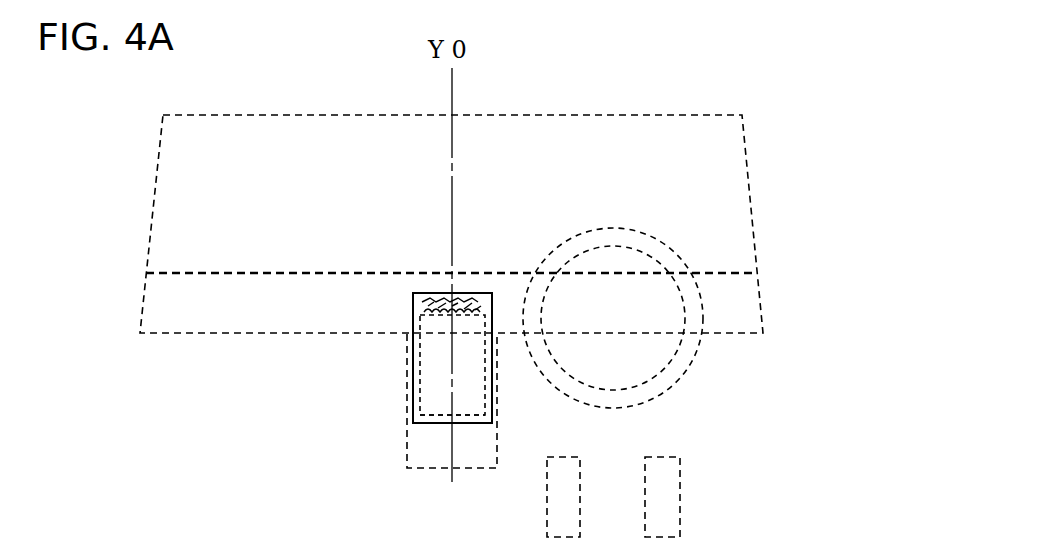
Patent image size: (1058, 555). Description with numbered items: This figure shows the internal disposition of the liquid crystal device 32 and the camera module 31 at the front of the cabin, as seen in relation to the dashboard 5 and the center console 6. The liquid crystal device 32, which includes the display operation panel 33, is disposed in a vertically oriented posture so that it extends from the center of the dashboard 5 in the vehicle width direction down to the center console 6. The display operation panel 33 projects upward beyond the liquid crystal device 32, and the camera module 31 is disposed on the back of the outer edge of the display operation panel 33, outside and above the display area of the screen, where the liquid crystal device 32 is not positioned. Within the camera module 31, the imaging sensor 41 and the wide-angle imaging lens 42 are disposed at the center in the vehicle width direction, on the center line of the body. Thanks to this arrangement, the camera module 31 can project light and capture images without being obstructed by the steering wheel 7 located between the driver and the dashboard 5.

The dashboard 5 is at (250, 335).
The center console 6 is at (407, 378).
The steering wheel 7 is at (683, 383).
The camera module 31 is at (467, 290).
The liquid crystal device 32 is at (472, 370).
The display operation panel 33 is at (420, 424).
The imaging sensor 41 is at (443, 290).
The wide-angle imaging lens 42 is at (450, 300).